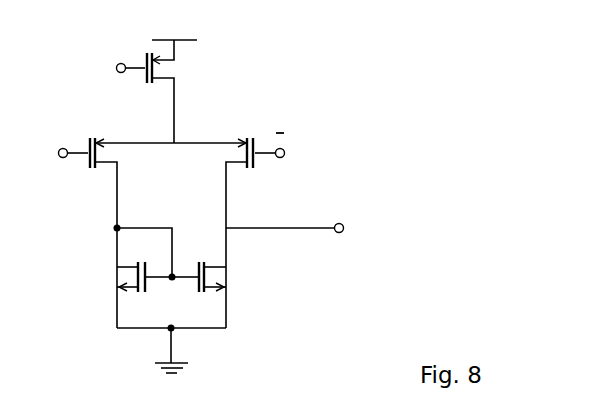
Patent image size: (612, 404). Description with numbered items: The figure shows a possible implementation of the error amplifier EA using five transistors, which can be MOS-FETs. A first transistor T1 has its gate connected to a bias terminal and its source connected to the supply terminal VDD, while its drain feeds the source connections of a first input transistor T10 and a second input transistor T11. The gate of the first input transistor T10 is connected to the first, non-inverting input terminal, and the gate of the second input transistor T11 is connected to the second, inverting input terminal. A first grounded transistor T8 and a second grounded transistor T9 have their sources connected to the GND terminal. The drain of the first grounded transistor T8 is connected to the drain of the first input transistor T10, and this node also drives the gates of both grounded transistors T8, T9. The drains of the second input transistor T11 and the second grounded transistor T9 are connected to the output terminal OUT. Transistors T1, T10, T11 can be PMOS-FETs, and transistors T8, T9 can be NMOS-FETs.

The error amplifier EA is at (344, 68).
The supply terminal VDD is at (179, 23).
The first transistor T1 is at (137, 85).
The first input transistor T10 is at (104, 225).
The second input transistor T11 is at (238, 230).
The first grounded transistor T8 is at (114, 282).
The second grounded transistor T9 is at (217, 282).
The output terminal OUT is at (345, 230).